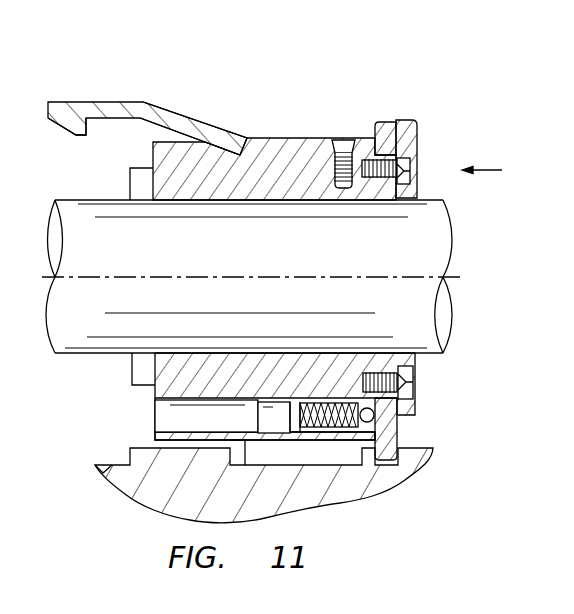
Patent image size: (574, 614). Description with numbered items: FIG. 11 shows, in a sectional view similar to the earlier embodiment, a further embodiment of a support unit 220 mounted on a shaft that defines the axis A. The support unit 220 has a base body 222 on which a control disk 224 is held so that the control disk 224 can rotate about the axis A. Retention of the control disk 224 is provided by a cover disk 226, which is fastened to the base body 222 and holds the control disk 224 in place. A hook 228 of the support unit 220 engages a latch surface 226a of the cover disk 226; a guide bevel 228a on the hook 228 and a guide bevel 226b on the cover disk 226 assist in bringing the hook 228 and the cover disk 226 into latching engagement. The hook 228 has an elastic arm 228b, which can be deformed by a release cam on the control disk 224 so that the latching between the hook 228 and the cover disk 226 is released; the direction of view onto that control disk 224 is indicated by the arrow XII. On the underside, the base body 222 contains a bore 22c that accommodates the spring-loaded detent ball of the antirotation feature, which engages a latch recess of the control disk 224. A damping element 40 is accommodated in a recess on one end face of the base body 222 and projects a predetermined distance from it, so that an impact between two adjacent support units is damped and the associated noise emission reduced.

The support unit 220 is at (128, 56).
The base body 222 is at (283, 170).
The control disk 224 is at (398, 427).
The cover disk 226 is at (415, 140).
The latch surface 226a is at (385, 132).
The guide bevel 226b is at (408, 120).
The hook 228 is at (72, 107).
The guide bevel 228a is at (65, 130).
The arm 228b is at (205, 128).
The damping element 40 is at (132, 372).
The bore 22c is at (171, 430).
The axis A is at (402, 273).
The view direction arrow XII is at (499, 171).